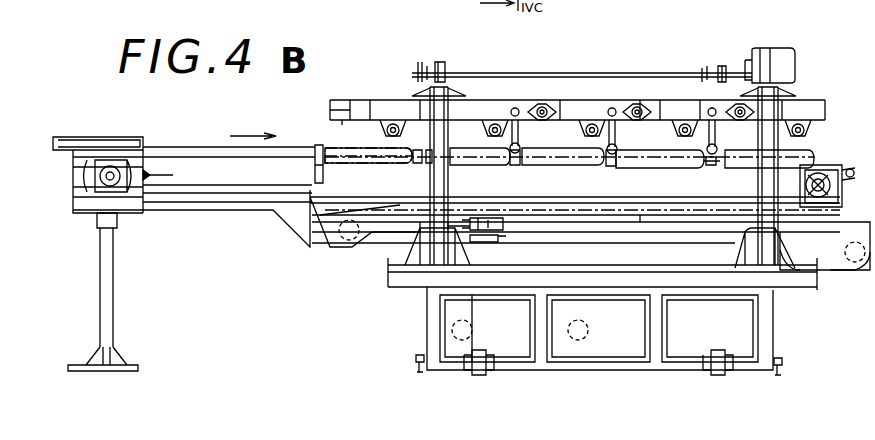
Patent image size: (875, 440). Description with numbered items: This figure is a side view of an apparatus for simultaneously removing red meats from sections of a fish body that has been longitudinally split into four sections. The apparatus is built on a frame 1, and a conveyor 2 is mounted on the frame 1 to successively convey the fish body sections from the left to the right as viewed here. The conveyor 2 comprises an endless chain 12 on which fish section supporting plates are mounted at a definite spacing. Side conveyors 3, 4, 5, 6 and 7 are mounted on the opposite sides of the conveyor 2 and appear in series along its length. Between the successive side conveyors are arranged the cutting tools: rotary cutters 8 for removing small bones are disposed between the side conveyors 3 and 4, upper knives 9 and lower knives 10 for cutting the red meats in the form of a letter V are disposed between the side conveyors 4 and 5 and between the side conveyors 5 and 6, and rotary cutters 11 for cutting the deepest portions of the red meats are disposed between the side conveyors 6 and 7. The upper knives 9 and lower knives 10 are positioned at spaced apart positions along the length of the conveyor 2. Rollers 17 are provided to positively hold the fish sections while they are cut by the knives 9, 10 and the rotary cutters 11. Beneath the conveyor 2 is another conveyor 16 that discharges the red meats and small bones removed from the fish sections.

The frame 1 is at (410, 284).
The conveyor 2 is at (200, 147).
The side conveyor 3 is at (364, 158).
The side conveyor 4 is at (462, 158).
The side conveyor 5 is at (547, 162).
The side conveyor 6 is at (657, 166).
The side conveyor 7 is at (733, 162).
The rotary cutters 8 is at (420, 163).
The upper knives 9 is at (518, 153).
The lower knives 10 is at (610, 168).
The rotary cutters 11 is at (708, 168).
The endless chain 12 is at (871, 127).
The conveyor 16 is at (520, 225).
The rollers 17 is at (520, 150).